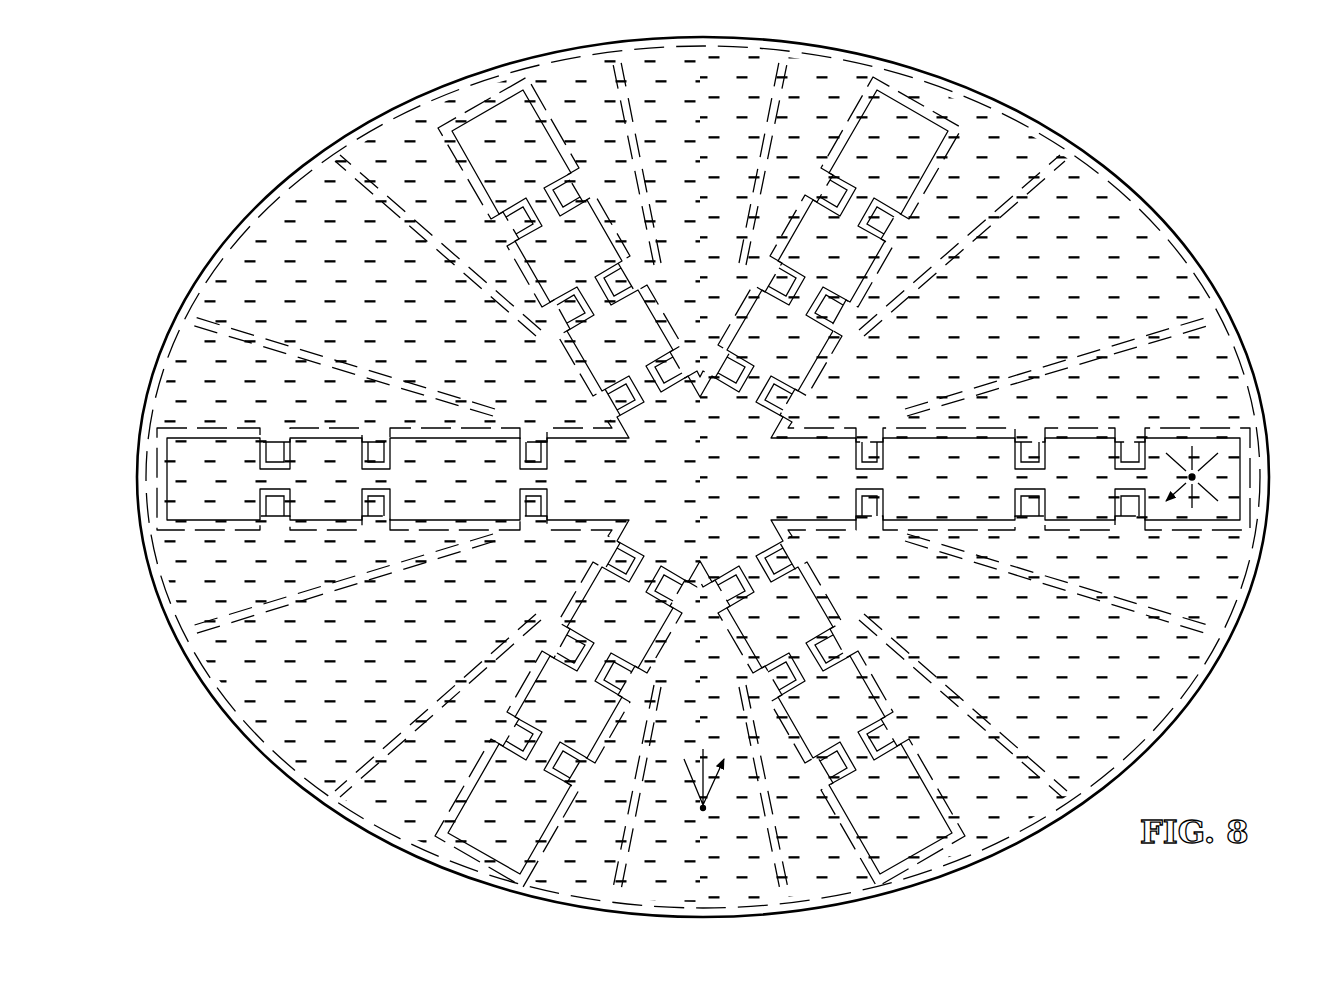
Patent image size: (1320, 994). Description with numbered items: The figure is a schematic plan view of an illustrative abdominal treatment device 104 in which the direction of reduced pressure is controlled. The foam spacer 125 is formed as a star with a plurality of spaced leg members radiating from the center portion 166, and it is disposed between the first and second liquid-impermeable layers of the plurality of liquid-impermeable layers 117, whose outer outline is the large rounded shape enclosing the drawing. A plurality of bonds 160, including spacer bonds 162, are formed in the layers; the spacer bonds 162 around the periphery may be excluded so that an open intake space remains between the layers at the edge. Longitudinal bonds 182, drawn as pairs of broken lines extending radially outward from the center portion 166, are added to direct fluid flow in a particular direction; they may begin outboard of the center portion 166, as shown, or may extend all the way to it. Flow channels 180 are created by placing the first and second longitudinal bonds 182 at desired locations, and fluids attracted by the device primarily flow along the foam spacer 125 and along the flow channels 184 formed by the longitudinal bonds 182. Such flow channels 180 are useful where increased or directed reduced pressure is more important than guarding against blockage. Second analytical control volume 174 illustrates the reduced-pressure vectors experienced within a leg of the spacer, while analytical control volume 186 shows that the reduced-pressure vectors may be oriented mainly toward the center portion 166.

The abdominal treatment device 104 is at (1097, 154).
The plurality of liquid-impermeable layers 117 is at (1208, 277).
The foam spacer 125 is at (323, 440).
The bonds 160 is at (222, 437).
The spacer bonds 162 is at (927, 110).
The center portion 166 is at (719, 492).
The second analytical control volume 174 is at (1191, 474).
The flow channels 180 is at (769, 891).
The longitudinal bonds 182 is at (363, 170).
The flow channels 184 is at (284, 229).
The analytical control volume 186 is at (703, 811).